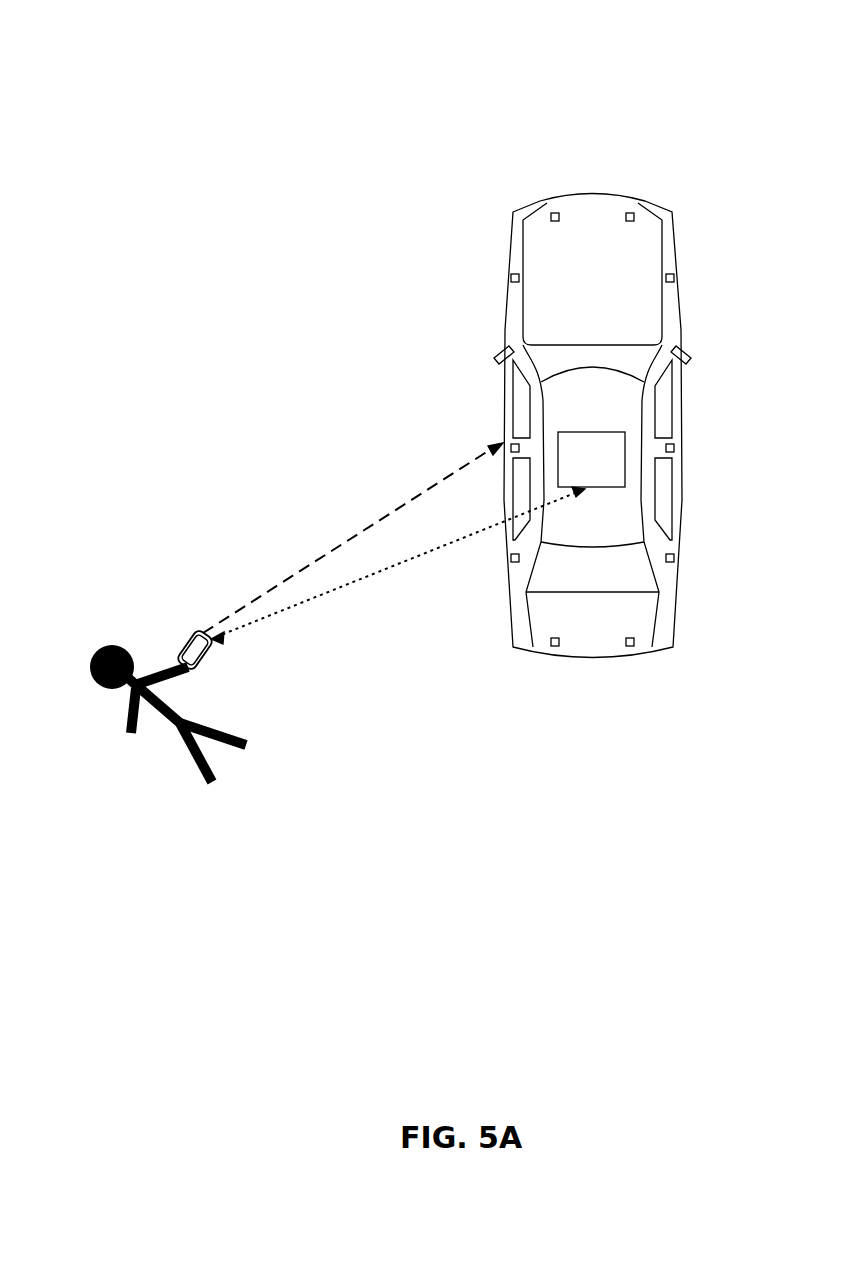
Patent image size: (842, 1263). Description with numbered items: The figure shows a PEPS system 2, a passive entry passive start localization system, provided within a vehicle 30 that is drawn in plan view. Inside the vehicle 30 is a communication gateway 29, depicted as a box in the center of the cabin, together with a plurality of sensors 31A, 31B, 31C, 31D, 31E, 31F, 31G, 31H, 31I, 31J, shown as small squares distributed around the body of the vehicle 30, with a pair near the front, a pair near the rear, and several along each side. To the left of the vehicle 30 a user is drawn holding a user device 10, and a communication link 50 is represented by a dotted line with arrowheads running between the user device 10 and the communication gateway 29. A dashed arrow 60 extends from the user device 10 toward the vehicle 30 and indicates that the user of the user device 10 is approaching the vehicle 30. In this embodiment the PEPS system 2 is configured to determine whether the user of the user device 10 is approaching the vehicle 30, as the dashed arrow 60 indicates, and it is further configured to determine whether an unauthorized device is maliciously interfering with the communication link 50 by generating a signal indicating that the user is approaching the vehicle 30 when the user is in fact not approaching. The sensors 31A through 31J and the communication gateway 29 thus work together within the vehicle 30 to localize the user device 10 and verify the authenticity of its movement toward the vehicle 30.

The PEPS system 2 is at (170, 68).
The user device 10 is at (208, 660).
The communication gateway 29 is at (600, 488).
The vehicle 30 is at (682, 405).
The sensor 31A is at (555, 222).
The sensor 31B is at (510, 278).
The sensor 31C is at (520, 445).
The sensor 31D is at (511, 558).
The sensor 31E is at (555, 637).
The sensor 31F is at (630, 647).
The sensor 31G is at (675, 558).
The sensor 31H is at (675, 450).
The sensor 31I is at (675, 278).
The sensor 31J is at (630, 222).
The communication link 50 is at (340, 588).
The dashed arrow 60 is at (441, 480).